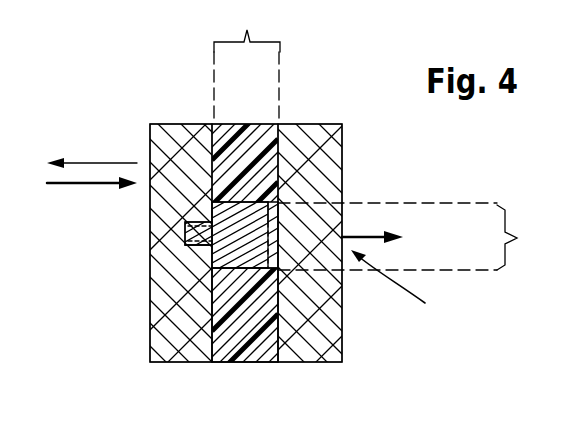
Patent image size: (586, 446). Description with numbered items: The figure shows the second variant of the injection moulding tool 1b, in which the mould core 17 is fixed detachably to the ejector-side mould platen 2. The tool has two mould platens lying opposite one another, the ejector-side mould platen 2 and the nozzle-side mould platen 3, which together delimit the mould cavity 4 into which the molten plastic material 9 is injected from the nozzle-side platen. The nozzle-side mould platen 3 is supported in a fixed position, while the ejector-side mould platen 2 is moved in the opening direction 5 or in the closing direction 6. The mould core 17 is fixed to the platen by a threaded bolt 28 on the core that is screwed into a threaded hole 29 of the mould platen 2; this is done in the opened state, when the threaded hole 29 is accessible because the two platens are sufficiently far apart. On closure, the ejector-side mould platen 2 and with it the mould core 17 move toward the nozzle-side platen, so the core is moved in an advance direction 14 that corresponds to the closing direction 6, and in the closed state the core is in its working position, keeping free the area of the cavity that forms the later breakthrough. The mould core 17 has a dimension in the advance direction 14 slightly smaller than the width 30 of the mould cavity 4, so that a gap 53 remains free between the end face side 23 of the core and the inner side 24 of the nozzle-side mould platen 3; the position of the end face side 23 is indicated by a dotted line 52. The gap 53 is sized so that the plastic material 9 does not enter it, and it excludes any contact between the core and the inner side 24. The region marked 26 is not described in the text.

The injection moulding tool 1b is at (453, 314).
The ejector-side mould platen 2 is at (165, 343).
The nozzle-side mould platen 3 is at (312, 340).
The mould cavity 4 is at (281, 170).
The opening direction 5 is at (92, 151).
The closing direction 6 is at (92, 196).
The plastic material 9 is at (245, 246).
The advance direction 14 is at (358, 237).
The mould core 17 is at (240, 255).
The end face side 23 is at (283, 225).
The inner side 24 is at (268, 340).
The flow region 26 is at (280, 248).
The threaded bolt 28 is at (188, 222).
The threaded hole 29 is at (189, 246).
The width of the mould cavity 30 is at (247, 61).
The dotted line 52 is at (274, 237).
The gap 53 is at (272, 200).